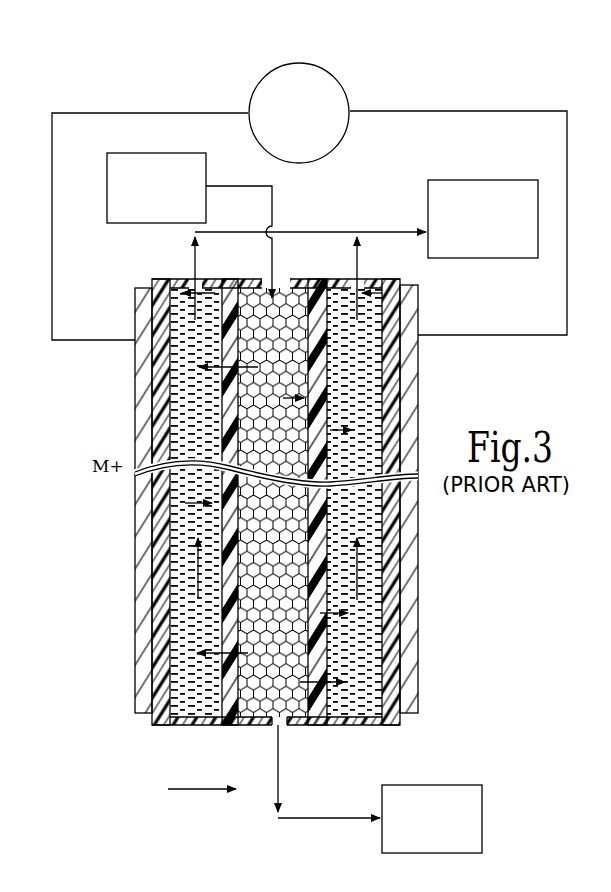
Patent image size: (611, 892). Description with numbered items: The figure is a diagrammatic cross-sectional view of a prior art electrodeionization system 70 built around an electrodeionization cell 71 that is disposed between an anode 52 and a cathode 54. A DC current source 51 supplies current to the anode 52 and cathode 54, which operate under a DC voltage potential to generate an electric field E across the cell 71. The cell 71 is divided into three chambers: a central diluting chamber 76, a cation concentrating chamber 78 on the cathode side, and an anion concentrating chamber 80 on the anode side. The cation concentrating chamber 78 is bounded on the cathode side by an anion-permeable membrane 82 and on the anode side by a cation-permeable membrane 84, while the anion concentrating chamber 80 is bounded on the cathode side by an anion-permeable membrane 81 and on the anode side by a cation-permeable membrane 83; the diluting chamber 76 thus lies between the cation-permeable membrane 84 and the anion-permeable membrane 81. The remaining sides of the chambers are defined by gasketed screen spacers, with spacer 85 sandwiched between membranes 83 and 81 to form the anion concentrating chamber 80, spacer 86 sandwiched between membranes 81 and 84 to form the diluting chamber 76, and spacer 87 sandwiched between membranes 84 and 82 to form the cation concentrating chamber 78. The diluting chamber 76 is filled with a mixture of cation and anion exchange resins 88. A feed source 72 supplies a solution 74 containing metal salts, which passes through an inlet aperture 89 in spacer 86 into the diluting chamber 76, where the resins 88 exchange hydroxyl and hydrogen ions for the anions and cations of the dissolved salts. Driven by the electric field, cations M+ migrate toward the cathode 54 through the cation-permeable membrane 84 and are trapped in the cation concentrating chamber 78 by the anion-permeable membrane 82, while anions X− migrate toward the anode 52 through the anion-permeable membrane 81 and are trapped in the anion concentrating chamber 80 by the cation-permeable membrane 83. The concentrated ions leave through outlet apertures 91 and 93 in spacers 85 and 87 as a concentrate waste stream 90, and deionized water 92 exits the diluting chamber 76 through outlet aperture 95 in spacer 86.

The DC current source 51 is at (322, 83).
The anode 52 is at (140, 614).
The cathode 54 is at (410, 581).
The electrodeionization system 70 is at (437, 89).
The electrodeionization cell 71 is at (185, 739).
The feed source 72 is at (195, 150).
The solution 74 is at (276, 198).
The diluting chamber 76 is at (350, 392).
The cation concentrating chamber 78 is at (386, 655).
The anion concentrating chamber 80 is at (186, 416).
The anion-permeable membrane 81 is at (227, 728).
The anion-permeable membrane 82 is at (402, 527).
The cation-permeable membrane 83 is at (165, 728).
The cation-permeable membrane 84 is at (318, 730).
The spacer 85 is at (173, 277).
The spacer 86 is at (250, 277).
The spacer 87 is at (367, 277).
The mixture of cation and anion exchange resins 88 is at (178, 517).
The inlet aperture 89 is at (280, 274).
The concentrate waste stream 90 is at (470, 180).
The outlet aperture 91 is at (135, 312).
The deionized water 92 is at (435, 785).
The outlet aperture 93 is at (408, 309).
The outlet aperture 95 is at (273, 733).